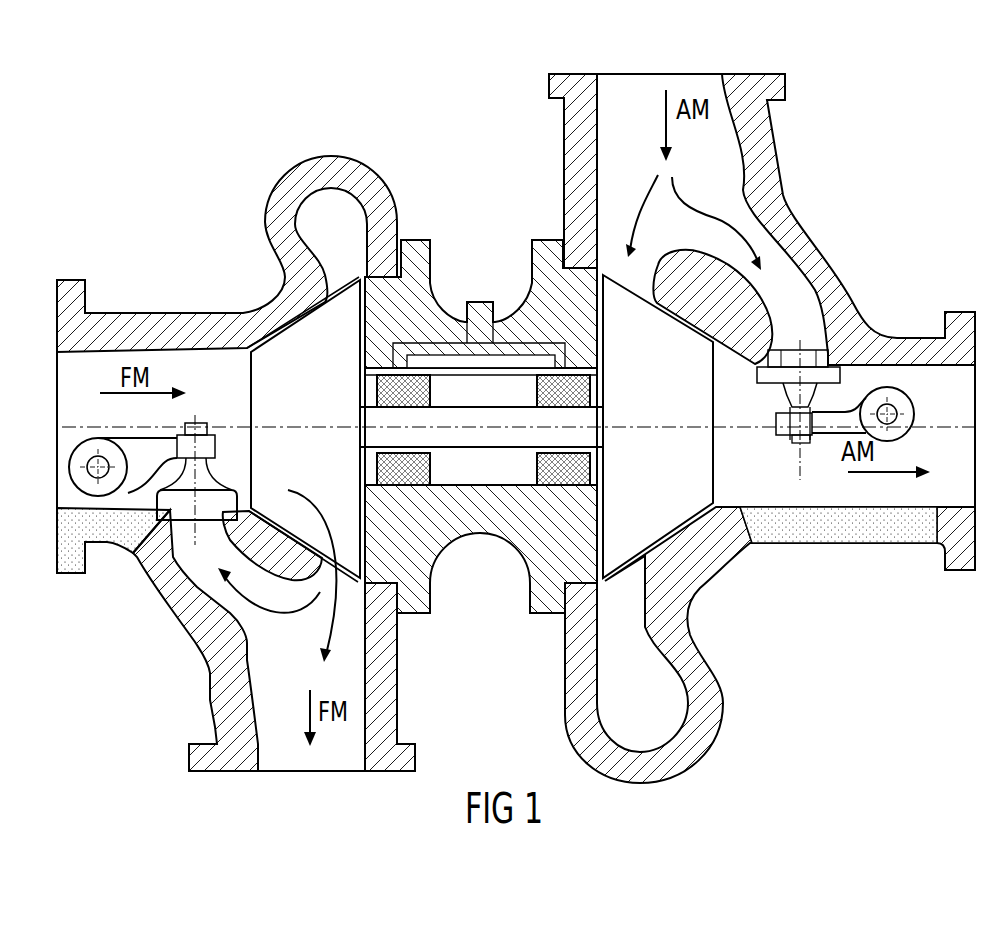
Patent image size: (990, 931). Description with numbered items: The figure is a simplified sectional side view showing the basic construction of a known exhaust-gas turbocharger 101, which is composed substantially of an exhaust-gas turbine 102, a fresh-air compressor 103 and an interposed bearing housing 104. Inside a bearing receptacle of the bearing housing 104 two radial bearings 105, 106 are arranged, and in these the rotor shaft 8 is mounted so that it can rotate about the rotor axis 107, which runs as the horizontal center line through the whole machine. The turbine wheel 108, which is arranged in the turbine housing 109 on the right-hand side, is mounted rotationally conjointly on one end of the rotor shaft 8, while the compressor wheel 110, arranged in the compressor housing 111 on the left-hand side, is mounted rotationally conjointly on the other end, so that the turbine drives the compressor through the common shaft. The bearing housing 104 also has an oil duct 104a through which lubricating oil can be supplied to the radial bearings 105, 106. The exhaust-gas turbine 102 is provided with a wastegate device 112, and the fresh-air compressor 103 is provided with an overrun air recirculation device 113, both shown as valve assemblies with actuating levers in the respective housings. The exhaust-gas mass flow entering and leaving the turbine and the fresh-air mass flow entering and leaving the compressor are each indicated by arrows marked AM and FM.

The exhaust-gas turbocharger 101 is at (302, 80).
The exhaust-gas turbine 102 is at (830, 200).
The fresh-air compressor 103 is at (240, 218).
The bearing housing 104 is at (417, 253).
The oil duct 104a is at (476, 300).
The radial bearing 105 is at (433, 488).
The radial bearing 106 is at (528, 488).
The rotor axis 107 is at (457, 428).
The rotor shaft 8 is at (512, 412).
The turbine wheel 108 is at (692, 505).
The turbine housing 109 is at (695, 620).
The compressor wheel 110 is at (297, 345).
The compressor housing 111 is at (273, 185).
The wastegate device 112 is at (808, 377).
The overrun air recirculation device 113 is at (130, 550).